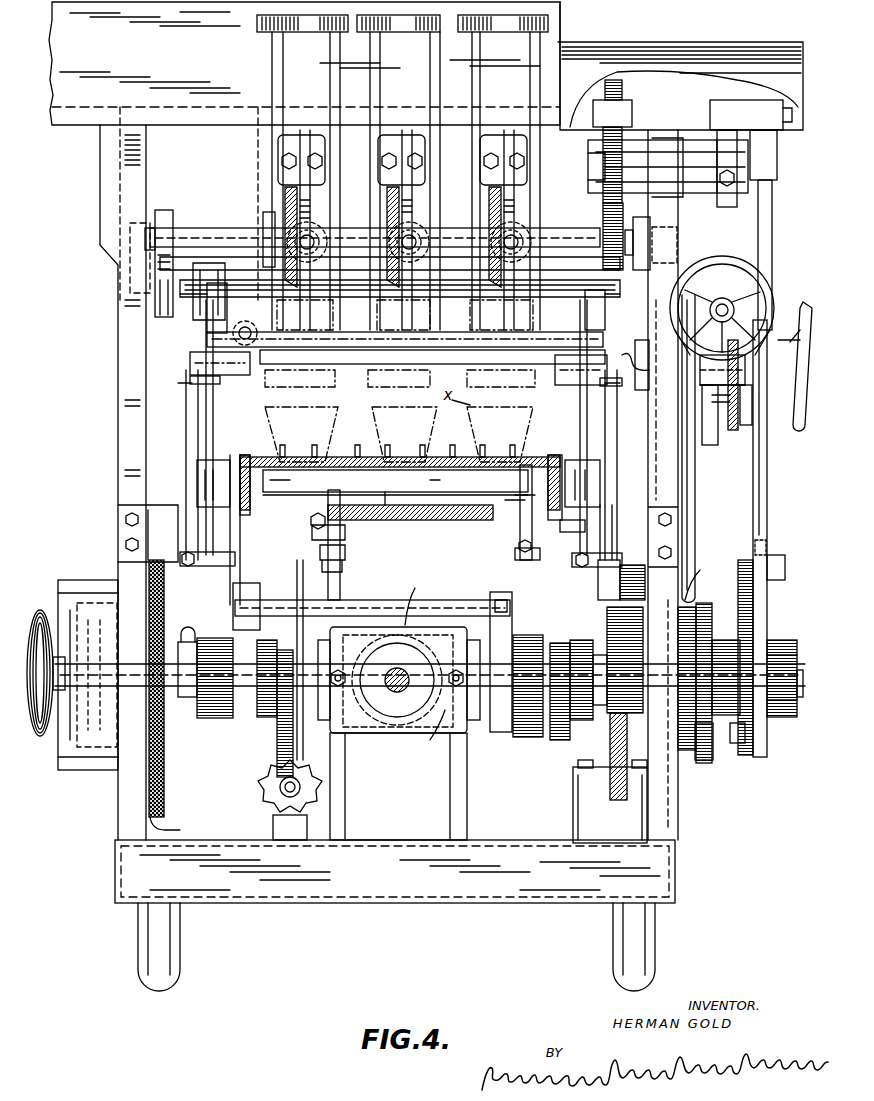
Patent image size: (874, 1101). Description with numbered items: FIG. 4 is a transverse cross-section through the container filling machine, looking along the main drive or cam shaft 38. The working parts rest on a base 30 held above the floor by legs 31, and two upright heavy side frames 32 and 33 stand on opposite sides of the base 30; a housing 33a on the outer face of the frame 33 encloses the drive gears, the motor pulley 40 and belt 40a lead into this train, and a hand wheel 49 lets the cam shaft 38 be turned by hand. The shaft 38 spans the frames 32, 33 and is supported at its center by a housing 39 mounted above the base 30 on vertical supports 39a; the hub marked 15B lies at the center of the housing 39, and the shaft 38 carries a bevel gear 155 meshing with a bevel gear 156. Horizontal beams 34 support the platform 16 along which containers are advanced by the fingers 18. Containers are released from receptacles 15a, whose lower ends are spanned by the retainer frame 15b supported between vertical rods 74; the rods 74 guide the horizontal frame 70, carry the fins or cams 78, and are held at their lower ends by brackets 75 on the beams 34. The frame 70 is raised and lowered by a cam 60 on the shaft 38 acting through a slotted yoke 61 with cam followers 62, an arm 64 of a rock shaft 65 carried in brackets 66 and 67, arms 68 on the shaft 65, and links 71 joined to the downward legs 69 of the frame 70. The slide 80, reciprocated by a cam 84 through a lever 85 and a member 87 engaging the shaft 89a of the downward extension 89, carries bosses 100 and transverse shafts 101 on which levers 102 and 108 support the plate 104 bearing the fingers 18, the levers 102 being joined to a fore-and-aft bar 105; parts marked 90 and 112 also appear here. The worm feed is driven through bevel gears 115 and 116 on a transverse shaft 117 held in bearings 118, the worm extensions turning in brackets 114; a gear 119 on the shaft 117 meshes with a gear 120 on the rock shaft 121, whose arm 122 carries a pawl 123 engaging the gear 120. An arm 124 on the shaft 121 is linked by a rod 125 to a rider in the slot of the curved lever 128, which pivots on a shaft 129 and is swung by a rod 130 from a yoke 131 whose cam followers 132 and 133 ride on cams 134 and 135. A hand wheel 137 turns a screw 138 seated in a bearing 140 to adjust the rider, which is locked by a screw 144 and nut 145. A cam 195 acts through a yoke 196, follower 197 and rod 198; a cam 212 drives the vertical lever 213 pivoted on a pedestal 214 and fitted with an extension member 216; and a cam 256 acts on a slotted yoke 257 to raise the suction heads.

The receptacles 15a is at (480, 68).
The horizontally disposed frame 15b is at (297, 338).
The drive shaft hub 15B is at (392, 692).
The platform 16 is at (258, 455).
The container pushers 18 is at (372, 457).
The base 30 is at (405, 903).
The legs 31 is at (672, 940).
The side frame 32 is at (662, 432).
The side frame 33 is at (125, 400).
The housing 33a is at (80, 580).
The horizontally disposed beams 34 is at (262, 518).
The main drive shaft 38 is at (802, 735).
The housing 39 is at (387, 698).
The vertical supports 39a is at (345, 795).
The pulley 40 is at (164, 768).
The belt 40a is at (182, 827).
The hand wheel 49 is at (38, 608).
The cam 60 is at (540, 720).
The yoke 61 is at (505, 735).
The cam followers 62 is at (528, 735).
The arm 64 is at (488, 600).
The rock shaft 65 is at (375, 600).
The bracket 66 is at (240, 575).
The bracket 67 is at (570, 525).
The arms 68 is at (585, 552).
The legs 69 is at (394, 385).
The horizontally disposed frame 70 is at (335, 370).
The links 71 is at (612, 482).
The vertical rods 74 is at (598, 320).
The brackets 75 is at (600, 497).
The cams 78 is at (585, 390).
The slide 80 is at (390, 530).
The cam 84 is at (265, 772).
The lever 85 is at (277, 740).
The member 87 is at (312, 525).
The downward extension 89 is at (345, 552).
The shaft 89a is at (340, 512).
The rod 90 is at (318, 780).
The bosses 100 is at (465, 490).
The transverse shafts 101 is at (515, 498).
The levers 102 is at (522, 540).
The plate 104 is at (418, 483).
The fore-and-aft bar 105 is at (528, 562).
The levers 108 is at (290, 483).
The collar 112 is at (575, 745).
The brackets 114 is at (408, 140).
The bevel gears 115 is at (515, 232).
The bevel gears 116 is at (495, 180).
The transverse shaft 117 is at (230, 230).
The bearings 118 is at (650, 222).
The gear 119 is at (604, 215).
The gear 120 is at (628, 160).
The rock shaft 121 is at (600, 175).
The arm 122 is at (620, 95).
The pawl 123 is at (605, 105).
The arm 124 is at (725, 102).
The rod 125 is at (772, 232).
The curved lever 128 is at (745, 428).
The shaft 129 is at (650, 370).
The rod 130 is at (767, 472).
The yoke 131 is at (760, 655).
The cam follower 132 is at (785, 565).
The cam follower 133 is at (735, 745).
The cam 134 is at (765, 612).
The cam 135 is at (738, 580).
The hand wheel 137 is at (770, 305).
The screw 138 is at (717, 430).
The bearing 140 is at (700, 360).
The screw 144 is at (796, 345).
The locking nut 145 is at (797, 422).
The bevel gear 155 is at (426, 739).
The bevel gear 156 is at (415, 598).
The cam 195 is at (722, 640).
The slotted yoke 196 is at (709, 569).
The cam follower 197 is at (700, 760).
The rod 198 is at (695, 500).
The cam 212 is at (625, 720).
The lever 213 is at (612, 760).
The pedestal 214 is at (598, 805).
The extension member 216 is at (612, 570).
The cam 256 is at (200, 712).
The slotted yoke 257 is at (185, 645).